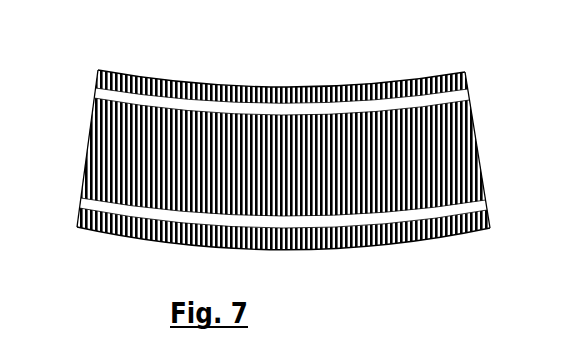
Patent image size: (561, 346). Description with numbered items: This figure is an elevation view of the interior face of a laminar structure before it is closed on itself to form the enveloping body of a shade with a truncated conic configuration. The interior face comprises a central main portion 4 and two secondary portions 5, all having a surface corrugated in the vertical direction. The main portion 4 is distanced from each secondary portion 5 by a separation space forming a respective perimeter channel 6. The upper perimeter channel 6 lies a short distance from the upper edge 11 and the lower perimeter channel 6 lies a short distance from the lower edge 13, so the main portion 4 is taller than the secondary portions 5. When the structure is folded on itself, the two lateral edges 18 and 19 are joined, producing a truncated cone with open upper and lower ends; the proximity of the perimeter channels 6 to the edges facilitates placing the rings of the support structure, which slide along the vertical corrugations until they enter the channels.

The main portion 4 is at (265, 155).
The secondary portions 5 is at (387, 83).
The perimeter channel 6 is at (170, 102).
The upper edge 11 is at (297, 85).
The lower edge 13 is at (307, 248).
The lateral edge 18 is at (90, 138).
The lateral edge 19 is at (473, 143).